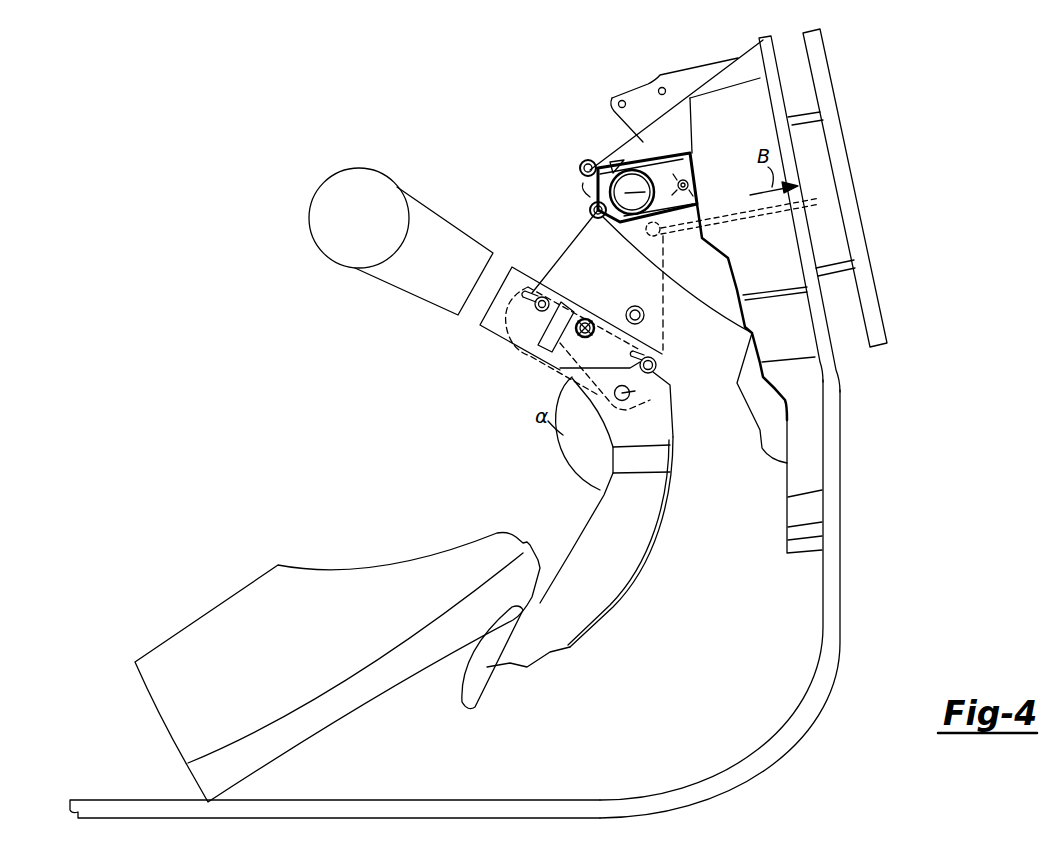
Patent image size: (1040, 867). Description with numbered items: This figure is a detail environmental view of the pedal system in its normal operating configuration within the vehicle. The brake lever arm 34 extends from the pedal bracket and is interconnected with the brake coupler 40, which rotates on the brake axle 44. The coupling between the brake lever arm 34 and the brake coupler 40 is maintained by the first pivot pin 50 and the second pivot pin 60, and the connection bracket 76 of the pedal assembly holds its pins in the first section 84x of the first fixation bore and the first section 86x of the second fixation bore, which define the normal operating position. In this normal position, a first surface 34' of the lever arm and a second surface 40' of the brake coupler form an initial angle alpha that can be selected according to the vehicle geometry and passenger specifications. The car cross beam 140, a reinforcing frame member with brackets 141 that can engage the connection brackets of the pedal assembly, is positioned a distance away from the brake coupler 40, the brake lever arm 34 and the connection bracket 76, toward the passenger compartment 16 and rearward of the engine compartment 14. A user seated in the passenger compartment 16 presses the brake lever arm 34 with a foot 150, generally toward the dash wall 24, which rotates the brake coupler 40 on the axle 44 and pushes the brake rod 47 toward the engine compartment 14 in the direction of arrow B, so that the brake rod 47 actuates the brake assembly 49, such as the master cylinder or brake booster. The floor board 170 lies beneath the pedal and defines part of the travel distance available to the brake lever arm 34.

The engine compartment area 14 is at (950, 237).
The passenger compartment 16 is at (124, 213).
The dash wall 24 is at (753, 760).
The brake lever arm 34 is at (580, 552).
The first portion or surface of the lever arm 34' is at (559, 538).
The brake coupler 40 is at (635, 321).
The second surface of the brake coupler 40' is at (575, 367).
The brake axle 44 is at (640, 192).
The brake rod 47 is at (830, 196).
The brake assembly 49 is at (820, 66).
The first pivot pin 50 is at (673, 428).
The second pivot pin 60 is at (587, 319).
The connection bracket 76 is at (486, 332).
The first section of first fixation bore 84x is at (542, 288).
The first section of second fixation bore 86x is at (666, 358).
The car cross beam 140 is at (336, 180).
The brackets 141 is at (468, 231).
The foot 150 is at (356, 568).
The floor board 170 is at (500, 800).